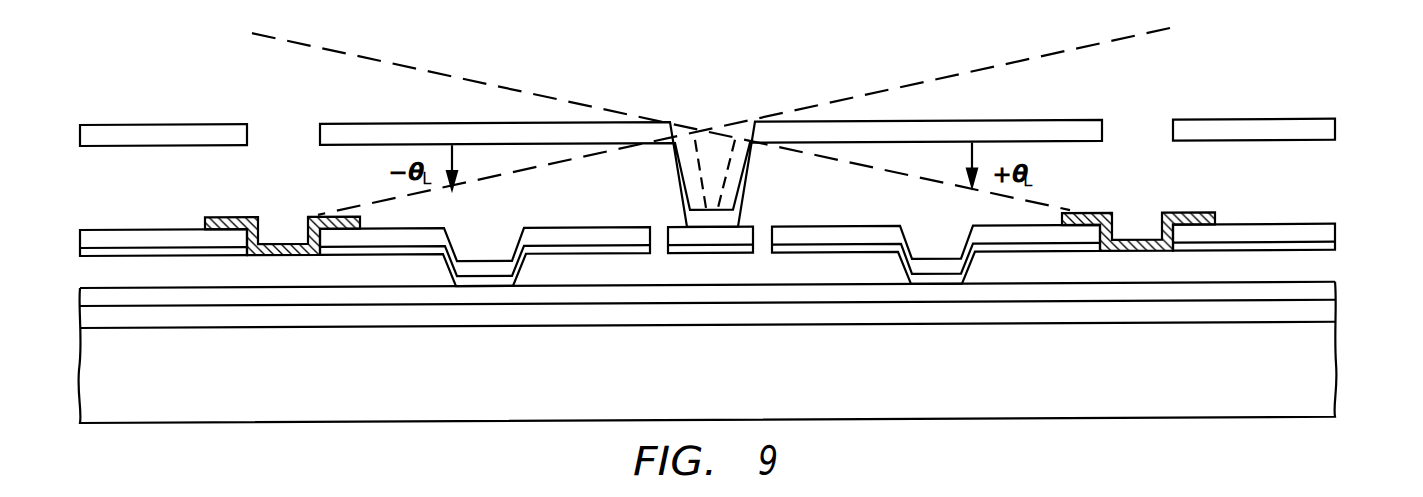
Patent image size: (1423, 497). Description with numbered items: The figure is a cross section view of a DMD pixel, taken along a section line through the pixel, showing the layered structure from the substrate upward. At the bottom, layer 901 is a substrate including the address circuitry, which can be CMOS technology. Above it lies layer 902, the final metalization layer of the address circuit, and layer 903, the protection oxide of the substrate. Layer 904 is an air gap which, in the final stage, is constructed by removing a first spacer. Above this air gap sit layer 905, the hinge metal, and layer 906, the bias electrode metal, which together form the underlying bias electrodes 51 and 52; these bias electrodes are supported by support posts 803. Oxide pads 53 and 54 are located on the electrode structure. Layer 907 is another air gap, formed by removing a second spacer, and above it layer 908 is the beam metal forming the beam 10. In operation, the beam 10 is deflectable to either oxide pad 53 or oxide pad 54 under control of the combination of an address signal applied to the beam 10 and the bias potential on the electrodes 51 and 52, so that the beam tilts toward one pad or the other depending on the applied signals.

The beam 10 is at (1012, 128).
The bias electrode 51 is at (433, 230).
The bias electrode 52 is at (988, 232).
The oxide pad 53 is at (354, 218).
The oxide pad 54 is at (1072, 218).
The support post 803 is at (487, 266).
The substrate 901 is at (1327, 369).
The final metalization layer 902 is at (1335, 316).
The protection oxide 903 is at (1335, 295).
The air gap 904 is at (1327, 273).
The hinge metal 905 is at (1335, 252).
The bias electrode metal 906 is at (741, 236).
The air gap 907 is at (1330, 192).
The beam metal 908 is at (1335, 136).